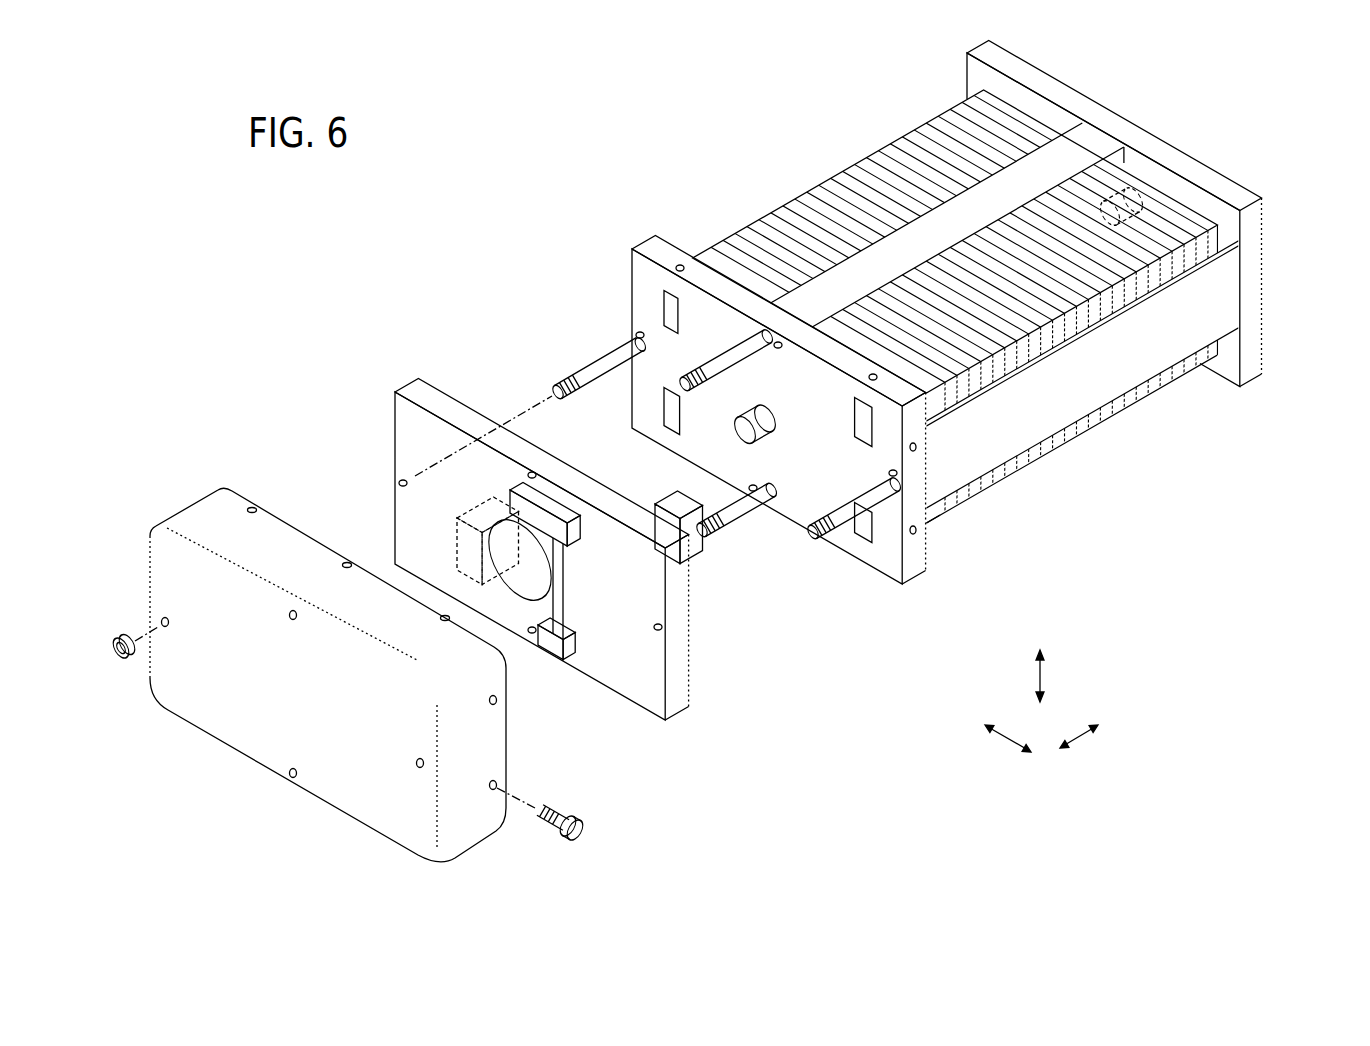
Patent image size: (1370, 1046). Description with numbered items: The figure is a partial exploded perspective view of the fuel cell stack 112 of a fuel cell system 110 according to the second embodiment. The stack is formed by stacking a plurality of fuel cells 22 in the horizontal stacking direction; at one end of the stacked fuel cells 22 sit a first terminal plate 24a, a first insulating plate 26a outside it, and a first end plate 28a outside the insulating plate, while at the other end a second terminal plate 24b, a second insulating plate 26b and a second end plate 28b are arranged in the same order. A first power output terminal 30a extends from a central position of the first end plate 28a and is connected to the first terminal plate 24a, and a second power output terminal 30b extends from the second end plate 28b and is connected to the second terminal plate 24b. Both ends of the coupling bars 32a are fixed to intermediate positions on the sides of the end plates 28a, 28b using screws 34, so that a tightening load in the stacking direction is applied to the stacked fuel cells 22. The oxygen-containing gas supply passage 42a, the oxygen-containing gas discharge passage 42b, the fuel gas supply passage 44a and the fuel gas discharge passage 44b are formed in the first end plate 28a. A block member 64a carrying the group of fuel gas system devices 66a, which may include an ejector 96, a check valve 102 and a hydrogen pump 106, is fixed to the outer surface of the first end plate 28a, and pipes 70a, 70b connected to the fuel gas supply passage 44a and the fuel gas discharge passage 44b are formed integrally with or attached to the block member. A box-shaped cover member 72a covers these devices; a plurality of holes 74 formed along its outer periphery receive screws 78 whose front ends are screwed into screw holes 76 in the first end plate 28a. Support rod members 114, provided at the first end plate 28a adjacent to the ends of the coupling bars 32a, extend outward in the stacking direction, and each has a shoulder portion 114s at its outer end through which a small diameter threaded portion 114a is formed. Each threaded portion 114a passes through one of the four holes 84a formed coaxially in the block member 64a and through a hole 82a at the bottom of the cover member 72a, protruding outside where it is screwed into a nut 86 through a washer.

The fuel cells 22 is at (955, 306).
The first terminal plate 24a is at (1082, 445).
The second terminal plate 24b is at (947, 182).
The first insulating plate 26a is at (961, 548).
The second insulating plate 26b is at (1095, 112).
The first end plate 28a is at (776, 381).
The second end plate 28b is at (1154, 214).
The first power output terminal 30a is at (734, 432).
The second power output terminal 30b is at (1177, 176).
The coupling bar 32a is at (1124, 257).
The screws 34 is at (766, 378).
The oxygen-containing gas supply passage 42a is at (622, 302).
The oxygen-containing gas discharge passage 42b is at (862, 557).
The fuel gas supply passage 44a is at (839, 409).
The fuel gas discharge passage 44b is at (648, 432).
The block member 64a is at (526, 524).
The group of fuel gas system devices 66a is at (669, 664).
The pipe 70a is at (701, 552).
The pipe 70b is at (462, 541).
The cover member 72a is at (328, 641).
The holes 74 is at (528, 765).
The screw holes 76 is at (925, 532).
The screws 78 is at (566, 816).
The hole 82a is at (194, 645).
The holes 84a is at (530, 566).
The nut 86 is at (123, 668).
The ejector 96 is at (569, 536).
The check valve 102 is at (575, 599).
The hydrogen pump 106 is at (493, 583).
The fuel cell system 110 is at (714, 449).
The fuel cell stack 112 is at (714, 449).
The support rod members 114 is at (657, 440).
The small diameter threaded portion 114a is at (536, 360).
The shoulder portion 114s is at (599, 394).